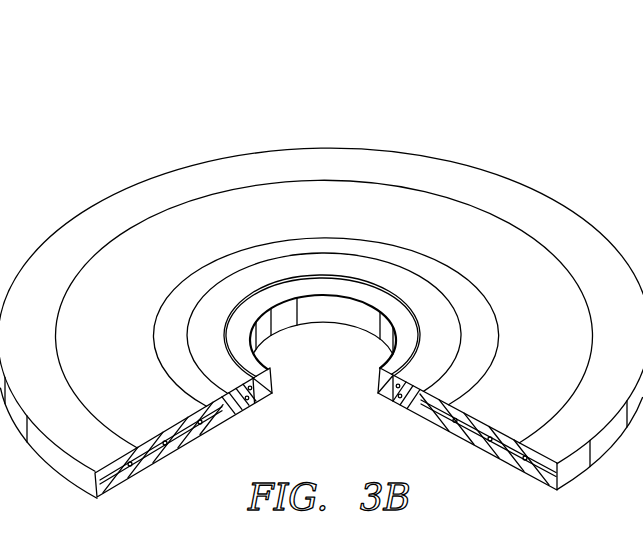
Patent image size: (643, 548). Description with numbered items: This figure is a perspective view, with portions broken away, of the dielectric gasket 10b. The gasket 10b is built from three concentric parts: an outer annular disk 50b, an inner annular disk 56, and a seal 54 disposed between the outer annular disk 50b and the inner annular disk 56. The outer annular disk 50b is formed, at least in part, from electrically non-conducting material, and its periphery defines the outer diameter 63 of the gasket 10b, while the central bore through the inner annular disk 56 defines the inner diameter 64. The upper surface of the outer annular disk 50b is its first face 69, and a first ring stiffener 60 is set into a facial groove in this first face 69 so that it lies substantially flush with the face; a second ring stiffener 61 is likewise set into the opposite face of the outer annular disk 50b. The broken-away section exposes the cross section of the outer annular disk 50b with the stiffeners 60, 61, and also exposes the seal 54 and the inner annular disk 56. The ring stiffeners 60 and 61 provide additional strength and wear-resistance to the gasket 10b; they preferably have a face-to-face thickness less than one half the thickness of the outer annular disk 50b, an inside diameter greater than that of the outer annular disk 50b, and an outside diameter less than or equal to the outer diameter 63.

The dielectric gasket 10b is at (321, 285).
The outer annular disk 50b is at (484, 183).
The first face 69 is at (572, 226).
The first ring stiffener 60 is at (160, 230).
The second ring stiffener 61 is at (153, 463).
The outer diameter 63 is at (93, 487).
The seal 54 is at (450, 340).
The inner annular disk 56 is at (395, 353).
The inner diameter 64 is at (318, 313).